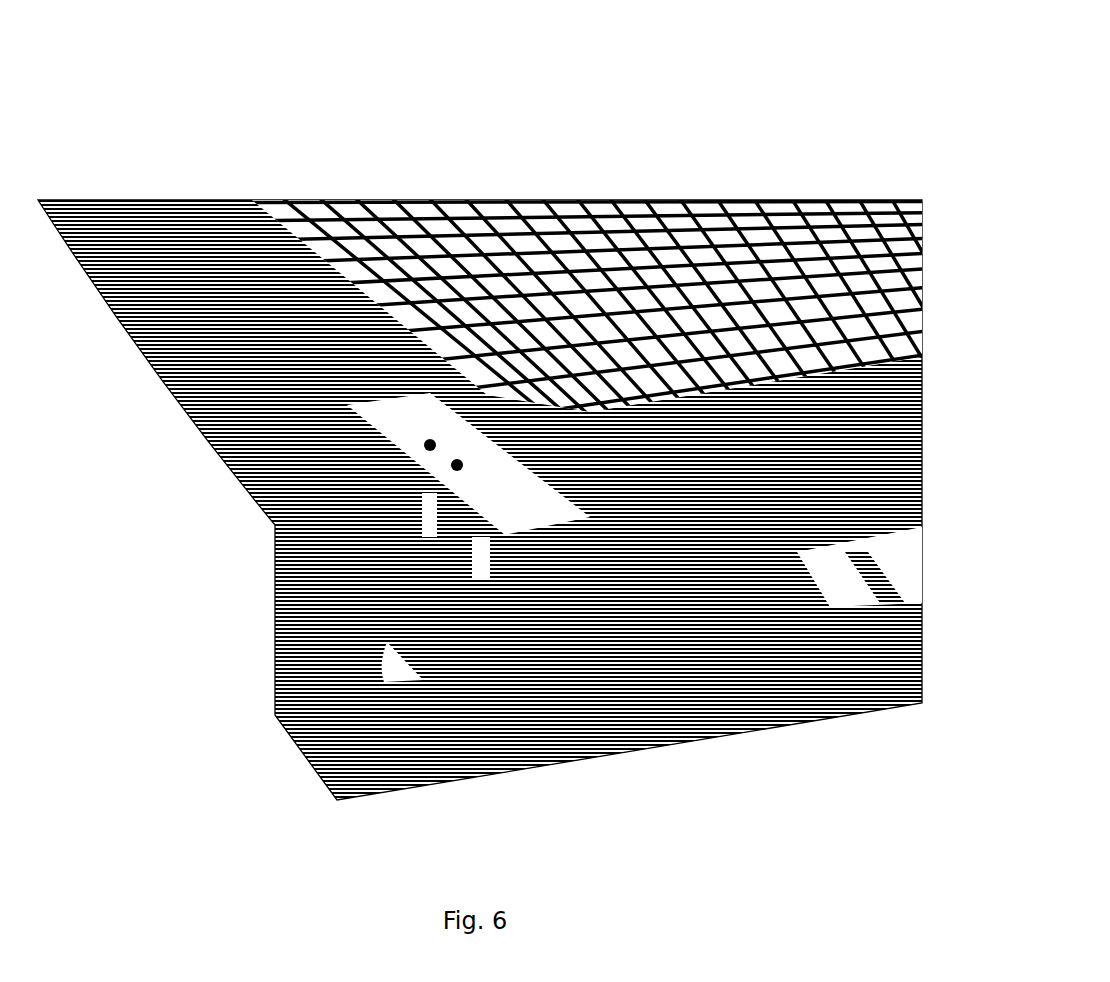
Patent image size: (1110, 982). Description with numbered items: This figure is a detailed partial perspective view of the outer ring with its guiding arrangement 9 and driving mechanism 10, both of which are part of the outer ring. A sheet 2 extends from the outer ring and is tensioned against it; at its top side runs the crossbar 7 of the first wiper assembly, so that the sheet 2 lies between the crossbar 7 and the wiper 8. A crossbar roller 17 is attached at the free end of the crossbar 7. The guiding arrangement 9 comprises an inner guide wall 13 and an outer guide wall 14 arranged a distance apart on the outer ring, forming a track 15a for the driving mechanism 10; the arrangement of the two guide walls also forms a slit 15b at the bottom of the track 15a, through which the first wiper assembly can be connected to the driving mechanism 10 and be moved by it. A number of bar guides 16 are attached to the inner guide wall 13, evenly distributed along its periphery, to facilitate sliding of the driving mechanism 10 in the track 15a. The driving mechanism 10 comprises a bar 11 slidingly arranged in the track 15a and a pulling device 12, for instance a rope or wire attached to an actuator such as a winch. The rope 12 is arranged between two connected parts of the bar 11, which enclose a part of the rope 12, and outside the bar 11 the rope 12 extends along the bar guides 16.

The sheet 2 is at (602, 297).
The crossbar 7 is at (735, 398).
The wiper 8 is at (685, 727).
The guiding arrangement 9 is at (193, 407).
The driving mechanism 10 is at (418, 535).
The bar 11 is at (415, 412).
The pulling device 12 is at (306, 237).
The inner guide wall 13 is at (268, 237).
The outer guide wall 14 is at (253, 322).
The track 15a is at (703, 673).
The slit 15b is at (652, 688).
The bar guides 16 is at (760, 620).
The crossbar roller 17 is at (627, 428).